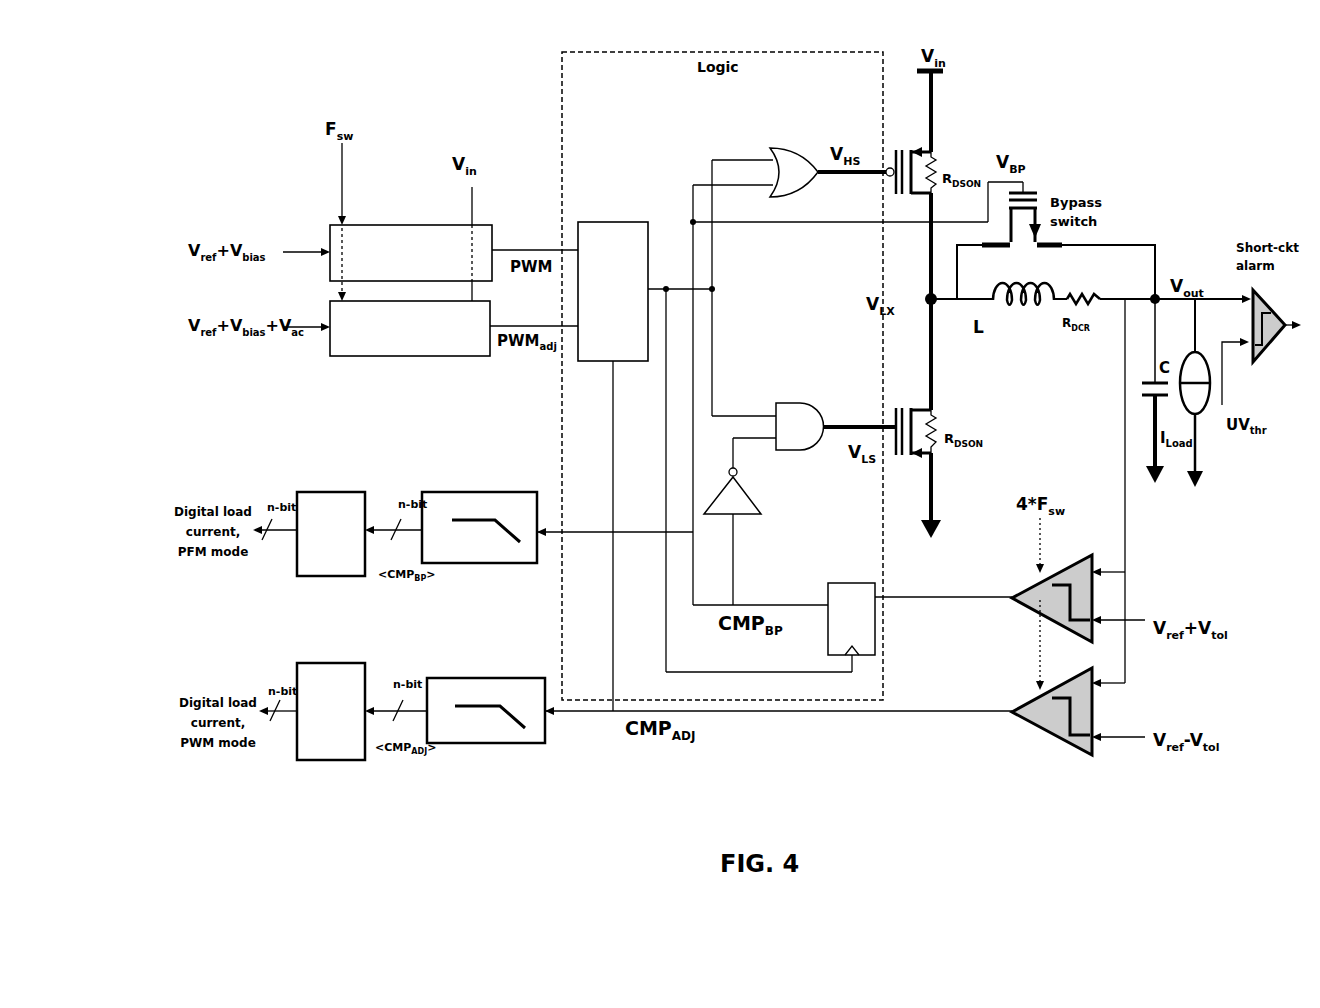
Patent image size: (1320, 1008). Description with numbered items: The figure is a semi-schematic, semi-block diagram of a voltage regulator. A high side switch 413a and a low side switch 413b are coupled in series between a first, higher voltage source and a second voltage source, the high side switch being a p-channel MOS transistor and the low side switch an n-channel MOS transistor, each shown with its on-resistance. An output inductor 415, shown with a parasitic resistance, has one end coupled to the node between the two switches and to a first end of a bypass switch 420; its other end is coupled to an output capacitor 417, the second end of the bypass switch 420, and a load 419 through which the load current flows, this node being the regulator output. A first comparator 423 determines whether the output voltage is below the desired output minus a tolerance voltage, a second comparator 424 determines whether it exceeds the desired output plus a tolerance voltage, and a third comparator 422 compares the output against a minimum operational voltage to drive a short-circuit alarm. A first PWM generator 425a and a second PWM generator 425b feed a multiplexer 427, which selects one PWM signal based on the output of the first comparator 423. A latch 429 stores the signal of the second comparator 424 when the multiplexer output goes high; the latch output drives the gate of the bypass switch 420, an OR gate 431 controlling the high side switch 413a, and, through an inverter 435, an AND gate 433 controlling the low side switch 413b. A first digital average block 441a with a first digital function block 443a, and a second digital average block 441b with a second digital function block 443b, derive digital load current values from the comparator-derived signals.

The first pulse-width modulation (PWM) generator 425a is at (360, 225).
The second PWM generator 425b is at (352, 356).
The multiplexer 427 is at (612, 222).
The OR gate 431 is at (795, 196).
The AND gate 433 is at (796, 402).
The inverter 435 is at (752, 500).
The latch 429 is at (840, 583).
The high side switch 413a is at (897, 150).
The low side switch 413b is at (905, 407).
The bypass switch 420 is at (1032, 191).
The output inductor 415 is at (1052, 310).
The output capacitor 417 is at (1150, 398).
The load 419 is at (1207, 357).
The third comparator 422 is at (1268, 307).
The second comparator 424 is at (1063, 566).
The first comparator 423 is at (1037, 729).
The first digital average block 441a is at (472, 492).
The first digital function block 443a is at (333, 492).
The second digital average block 441b is at (467, 678).
The second digital function block 443b is at (333, 663).